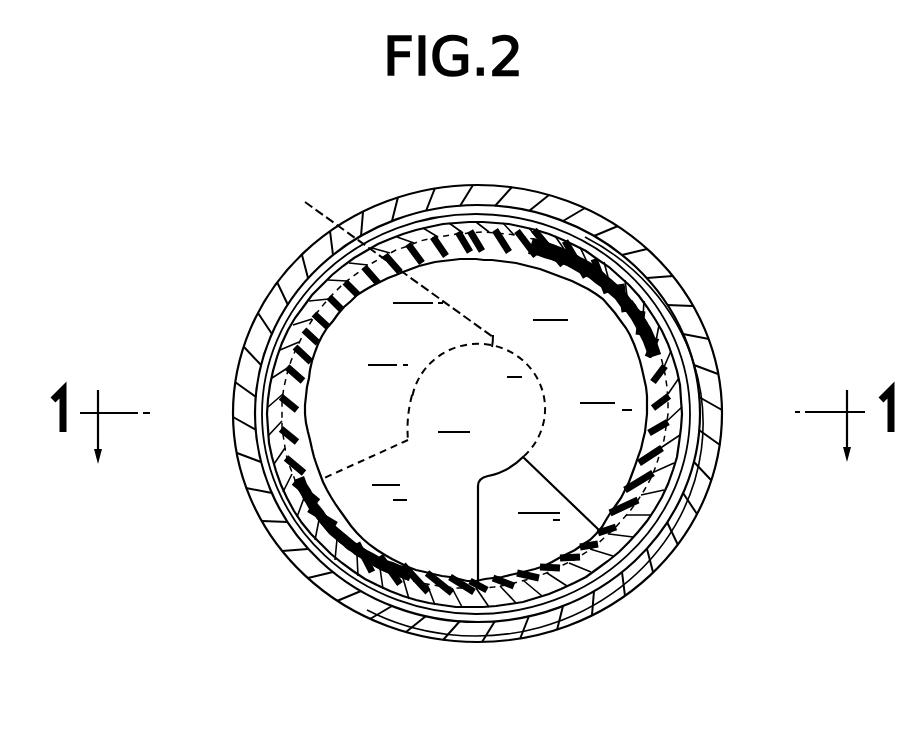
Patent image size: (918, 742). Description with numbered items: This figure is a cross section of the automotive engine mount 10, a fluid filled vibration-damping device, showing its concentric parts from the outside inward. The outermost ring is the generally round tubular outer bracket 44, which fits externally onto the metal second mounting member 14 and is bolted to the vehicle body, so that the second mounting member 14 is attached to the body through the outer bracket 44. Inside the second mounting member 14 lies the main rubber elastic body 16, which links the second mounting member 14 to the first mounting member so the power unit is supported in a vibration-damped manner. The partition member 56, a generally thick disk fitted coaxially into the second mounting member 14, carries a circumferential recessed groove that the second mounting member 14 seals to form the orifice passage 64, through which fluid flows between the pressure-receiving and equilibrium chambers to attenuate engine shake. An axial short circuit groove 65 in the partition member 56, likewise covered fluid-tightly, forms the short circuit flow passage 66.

The engine mount 10 is at (667, 158).
The second mounting member 14 is at (240, 401).
The main rubber elastic body 16 is at (670, 327).
The outer bracket 44 is at (234, 505).
The partition member 56 is at (412, 518).
The orifice passage 64 is at (387, 266).
The short circuit groove 65 is at (410, 391).
The short circuit flow passage 66 is at (539, 521).